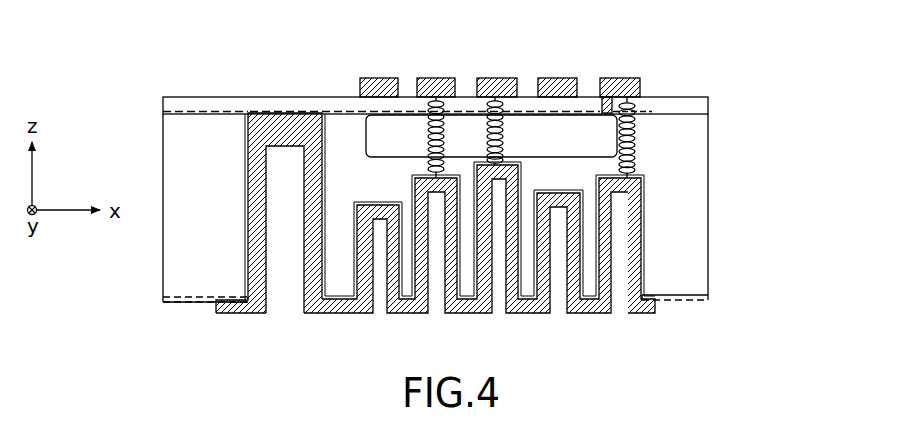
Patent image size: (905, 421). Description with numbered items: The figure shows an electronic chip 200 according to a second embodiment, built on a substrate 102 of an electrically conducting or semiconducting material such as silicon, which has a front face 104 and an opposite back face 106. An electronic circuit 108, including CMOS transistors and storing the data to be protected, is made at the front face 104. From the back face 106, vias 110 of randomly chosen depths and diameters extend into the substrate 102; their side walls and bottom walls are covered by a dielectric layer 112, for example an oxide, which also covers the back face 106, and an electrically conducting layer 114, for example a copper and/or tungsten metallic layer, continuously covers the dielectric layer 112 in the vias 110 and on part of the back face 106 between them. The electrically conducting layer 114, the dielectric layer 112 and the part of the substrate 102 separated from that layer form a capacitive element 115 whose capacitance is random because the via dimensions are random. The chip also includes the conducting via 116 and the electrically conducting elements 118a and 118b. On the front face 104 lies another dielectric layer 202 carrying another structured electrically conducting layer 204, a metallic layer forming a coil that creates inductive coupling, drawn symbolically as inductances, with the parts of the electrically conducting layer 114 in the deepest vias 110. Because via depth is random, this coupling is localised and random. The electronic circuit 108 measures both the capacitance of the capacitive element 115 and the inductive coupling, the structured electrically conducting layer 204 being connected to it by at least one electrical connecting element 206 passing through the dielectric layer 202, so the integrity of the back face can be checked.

The electronic chip 200 is at (746, 67).
The substrate 102 is at (700, 242).
The front face 104 is at (194, 106).
The back face 106 is at (184, 307).
The electronic circuit 108 is at (562, 128).
The vias 110 is at (379, 290).
The dielectric layer 112 is at (688, 300).
The electrically conducting layer 114 is at (317, 313).
The capacitive element 115 is at (658, 267).
The conducting via 116 is at (282, 290).
The electrically conducting element 118a is at (340, 111).
The electrically conducting element 118b is at (650, 112).
The dielectric layer 202 is at (230, 106).
The structured electrically conducting layer 204 is at (483, 77).
The electrical connecting element 206 is at (620, 77).